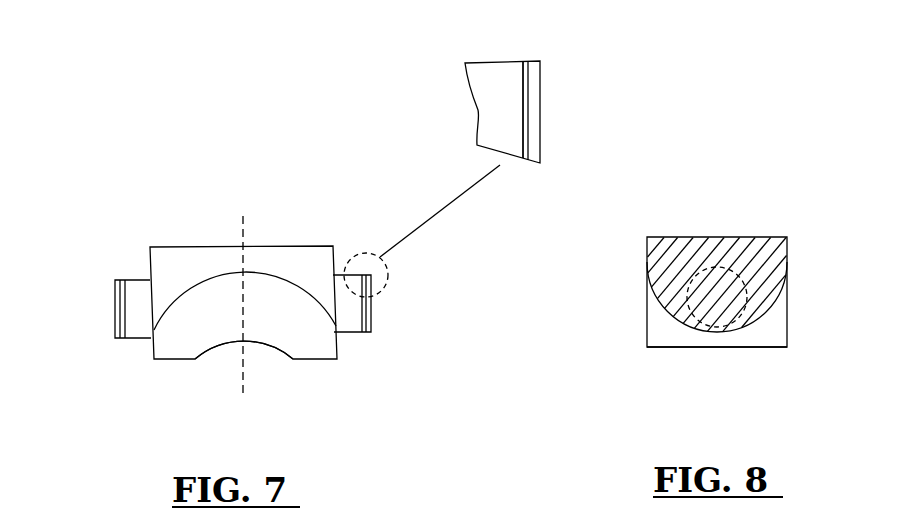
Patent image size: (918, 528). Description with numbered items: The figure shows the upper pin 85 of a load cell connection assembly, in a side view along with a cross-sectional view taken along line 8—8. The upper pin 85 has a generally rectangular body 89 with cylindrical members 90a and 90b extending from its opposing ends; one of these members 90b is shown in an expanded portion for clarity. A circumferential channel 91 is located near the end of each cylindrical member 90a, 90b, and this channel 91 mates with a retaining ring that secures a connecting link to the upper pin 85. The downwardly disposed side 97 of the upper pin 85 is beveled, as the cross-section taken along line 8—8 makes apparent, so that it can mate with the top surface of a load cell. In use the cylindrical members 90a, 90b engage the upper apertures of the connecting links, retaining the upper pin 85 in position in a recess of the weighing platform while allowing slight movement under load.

In FIG. 7, the section line 8— 8 is at (242, 216).
In FIG. 7, the upper pin 85 is at (299, 225).
In FIG. 8, the upper pin 85 is at (720, 222).
In FIG. 7, the rectangular body 89 is at (162, 267).
In FIG. 7, the cylindrical member 90a is at (135, 337).
In FIG. 7, the cylindrical member 90b is at (352, 327).
In FIG. 7, the circumferential channel 91 is at (523, 60).
In FIG. 7, the downwardly disposed side 97 is at (274, 360).
In FIG. 8, the downwardly disposed side 97 is at (671, 343).